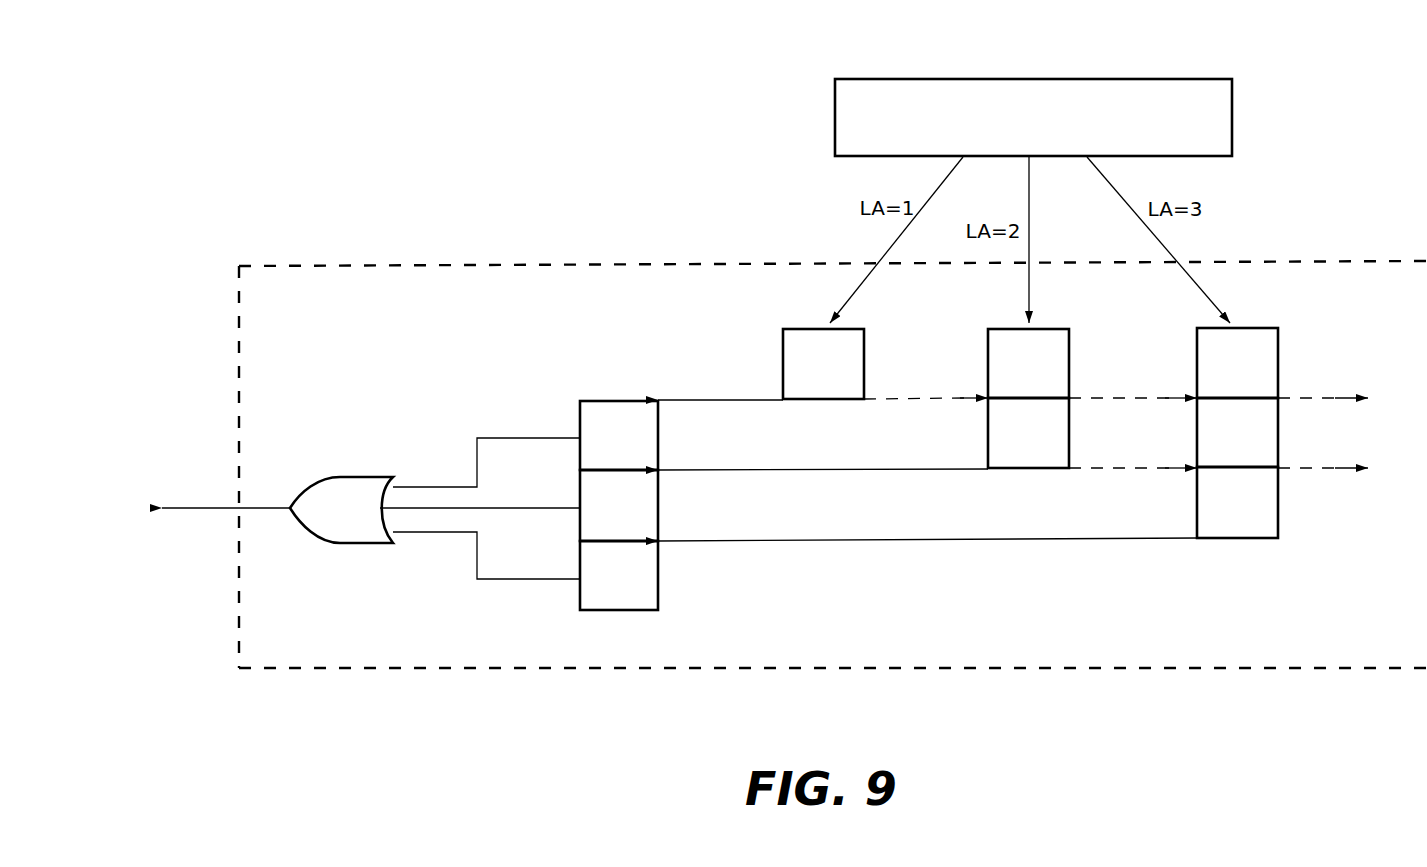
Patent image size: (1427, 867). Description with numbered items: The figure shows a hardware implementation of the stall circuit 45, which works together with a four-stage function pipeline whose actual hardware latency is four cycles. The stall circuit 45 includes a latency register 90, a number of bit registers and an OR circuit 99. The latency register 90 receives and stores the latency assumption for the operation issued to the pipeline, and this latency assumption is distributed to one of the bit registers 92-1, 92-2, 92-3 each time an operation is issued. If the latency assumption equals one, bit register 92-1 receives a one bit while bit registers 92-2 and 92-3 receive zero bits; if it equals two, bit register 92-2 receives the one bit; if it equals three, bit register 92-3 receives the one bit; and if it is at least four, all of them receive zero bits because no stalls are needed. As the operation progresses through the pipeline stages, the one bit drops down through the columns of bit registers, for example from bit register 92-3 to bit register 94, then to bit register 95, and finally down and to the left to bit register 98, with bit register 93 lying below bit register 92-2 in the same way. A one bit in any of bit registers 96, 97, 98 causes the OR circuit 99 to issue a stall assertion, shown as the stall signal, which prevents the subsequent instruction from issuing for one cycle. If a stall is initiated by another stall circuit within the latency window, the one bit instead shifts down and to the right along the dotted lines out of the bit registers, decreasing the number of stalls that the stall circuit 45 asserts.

The stall circuit 45 is at (1186, 667).
The latency register 90 is at (1232, 133).
The bit register 92-1 is at (783, 357).
The bit register 92-2 is at (1069, 347).
The bit register 92-3 is at (1278, 345).
The bit register 93 is at (988, 448).
The bit register 94 is at (1278, 448).
The bit register 95 is at (1278, 512).
The bit register 96 is at (658, 450).
The bit register 97 is at (658, 518).
The bit register 98 is at (658, 590).
The OR circuit 99 is at (312, 484).